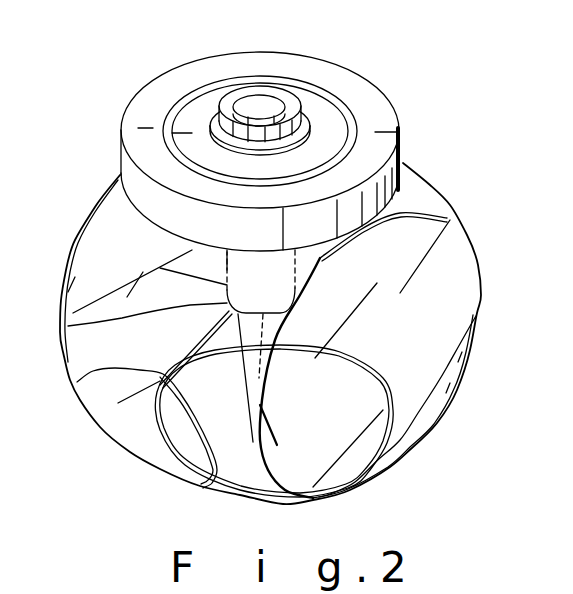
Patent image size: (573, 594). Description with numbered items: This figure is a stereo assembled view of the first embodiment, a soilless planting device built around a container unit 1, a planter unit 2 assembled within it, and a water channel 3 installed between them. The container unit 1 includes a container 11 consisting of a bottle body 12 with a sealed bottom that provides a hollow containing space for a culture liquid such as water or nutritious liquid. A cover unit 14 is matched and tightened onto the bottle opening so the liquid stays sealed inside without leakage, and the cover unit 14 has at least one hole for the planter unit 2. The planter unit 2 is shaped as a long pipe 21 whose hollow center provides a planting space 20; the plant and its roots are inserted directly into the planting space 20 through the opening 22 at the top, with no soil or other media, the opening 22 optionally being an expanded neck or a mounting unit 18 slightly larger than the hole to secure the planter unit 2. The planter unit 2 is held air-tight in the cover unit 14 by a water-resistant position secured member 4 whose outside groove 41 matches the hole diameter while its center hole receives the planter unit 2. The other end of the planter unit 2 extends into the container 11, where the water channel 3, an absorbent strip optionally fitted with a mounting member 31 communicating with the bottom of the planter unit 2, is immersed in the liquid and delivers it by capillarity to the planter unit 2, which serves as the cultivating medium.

The container unit 1 is at (473, 208).
The container 11 is at (477, 313).
The bottle body 12 is at (413, 451).
The cover unit 14 is at (403, 163).
The planter unit 2 is at (226, 250).
The long pipe 21 is at (216, 260).
The water channel 3 is at (243, 386).
The mounting member 31 is at (68, 326).
The position secured member 4 is at (318, 116).
The outside groove 41 is at (335, 135).
The mounting unit 18 is at (262, 108).
The planting space 20 is at (300, 113).
The opening 22 is at (276, 97).